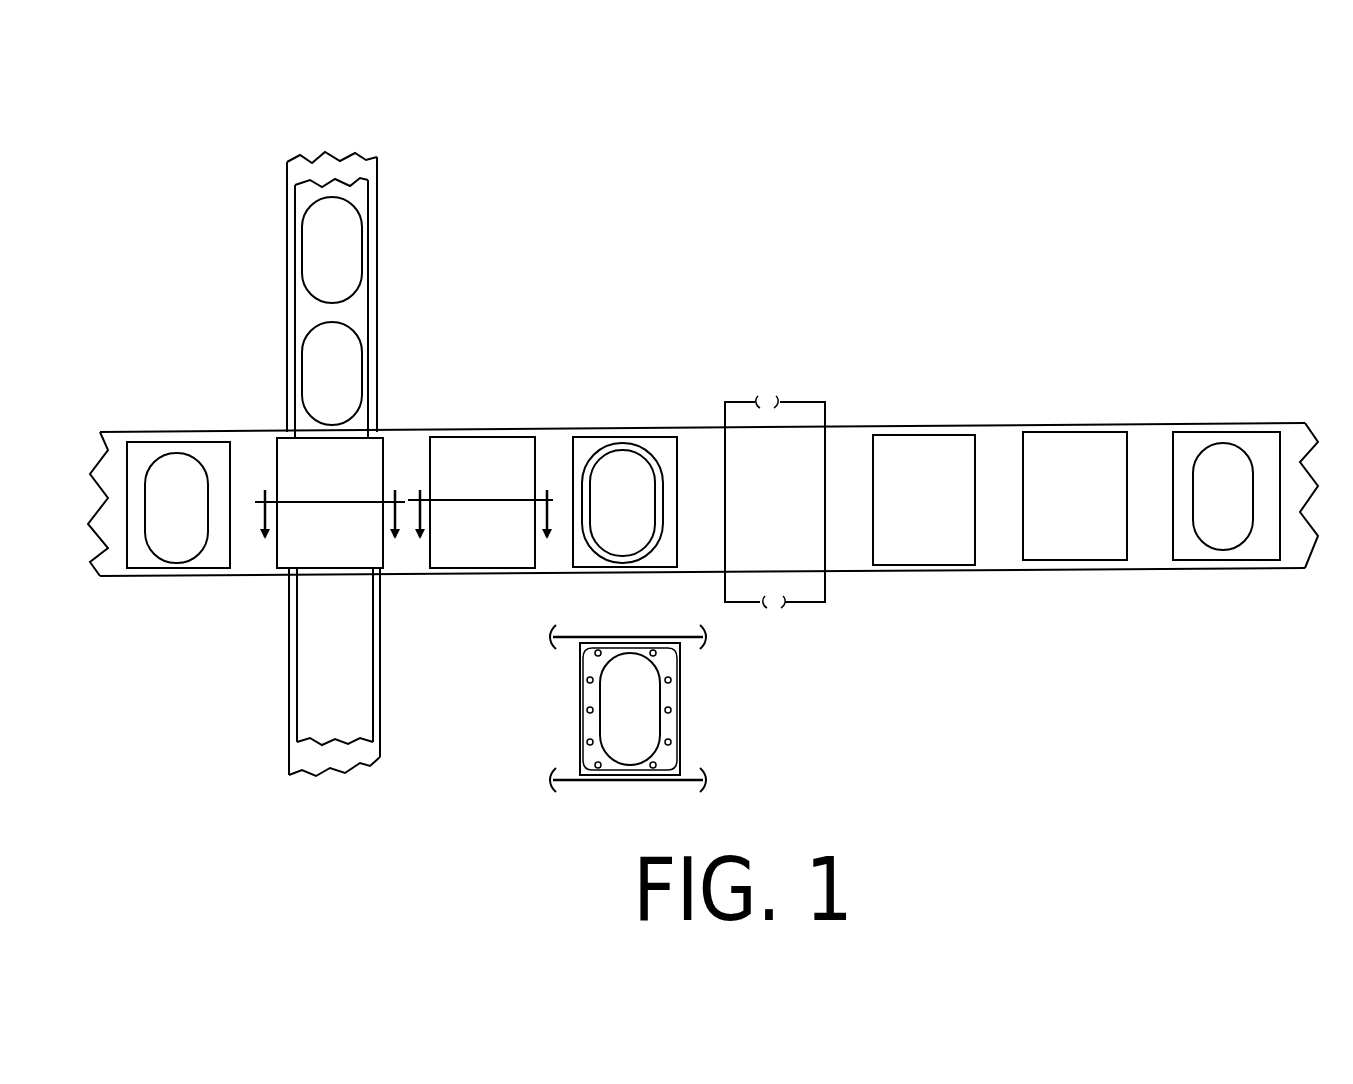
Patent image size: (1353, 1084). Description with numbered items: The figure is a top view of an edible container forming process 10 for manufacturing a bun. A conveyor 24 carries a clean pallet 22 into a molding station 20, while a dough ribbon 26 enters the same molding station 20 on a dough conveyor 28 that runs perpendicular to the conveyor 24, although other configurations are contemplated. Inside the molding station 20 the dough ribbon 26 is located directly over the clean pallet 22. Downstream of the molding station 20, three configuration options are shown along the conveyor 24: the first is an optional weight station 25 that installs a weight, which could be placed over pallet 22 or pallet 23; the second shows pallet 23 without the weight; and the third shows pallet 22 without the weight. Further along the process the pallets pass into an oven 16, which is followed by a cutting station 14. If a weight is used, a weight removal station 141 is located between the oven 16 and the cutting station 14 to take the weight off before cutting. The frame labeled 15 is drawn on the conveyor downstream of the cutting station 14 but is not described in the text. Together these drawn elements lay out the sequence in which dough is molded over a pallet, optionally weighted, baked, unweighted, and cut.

The edible container forming process 10 is at (783, 160).
The cutting station 14 is at (1061, 408).
The weight removal station 141 is at (905, 408).
The frame with opening 15 is at (1209, 408).
The oven 16 is at (785, 380).
The molding station 20 is at (300, 470).
The clean pallet 22 is at (677, 527).
The pallet 23 is at (680, 710).
The conveyor 24 is at (260, 573).
The weight station 25 is at (519, 420).
The dough ribbon 26 is at (322, 740).
The dough conveyor 28 is at (380, 680).